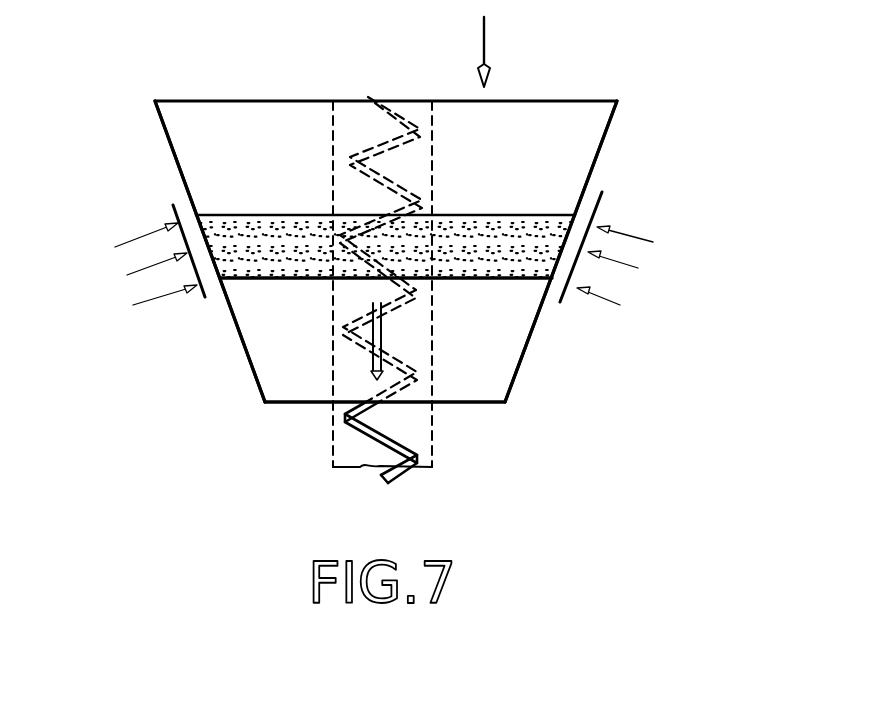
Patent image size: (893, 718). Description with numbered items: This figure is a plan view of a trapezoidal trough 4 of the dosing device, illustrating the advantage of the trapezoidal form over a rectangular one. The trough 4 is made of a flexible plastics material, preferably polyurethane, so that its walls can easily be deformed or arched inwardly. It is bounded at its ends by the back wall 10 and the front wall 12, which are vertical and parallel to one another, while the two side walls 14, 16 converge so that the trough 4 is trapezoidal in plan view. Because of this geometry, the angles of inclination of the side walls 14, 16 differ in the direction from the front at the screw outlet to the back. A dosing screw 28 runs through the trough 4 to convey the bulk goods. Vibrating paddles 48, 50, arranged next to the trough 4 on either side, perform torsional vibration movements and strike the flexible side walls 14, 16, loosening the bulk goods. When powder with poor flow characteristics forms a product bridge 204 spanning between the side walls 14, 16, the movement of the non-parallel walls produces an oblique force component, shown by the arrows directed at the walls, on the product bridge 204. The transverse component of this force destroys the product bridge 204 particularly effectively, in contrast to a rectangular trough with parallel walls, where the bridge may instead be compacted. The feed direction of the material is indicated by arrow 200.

The trough 4 is at (632, 139).
The back wall 10 is at (222, 100).
The front wall 12 is at (290, 403).
The side wall 14 is at (520, 370).
The side wall 16 is at (238, 346).
The dosing screw 28 is at (386, 100).
The vibrating paddle 48 is at (600, 208).
The vibrating paddle 50 is at (172, 208).
The direction of material feed 200 is at (484, 38).
The product bridge 204 is at (515, 279).